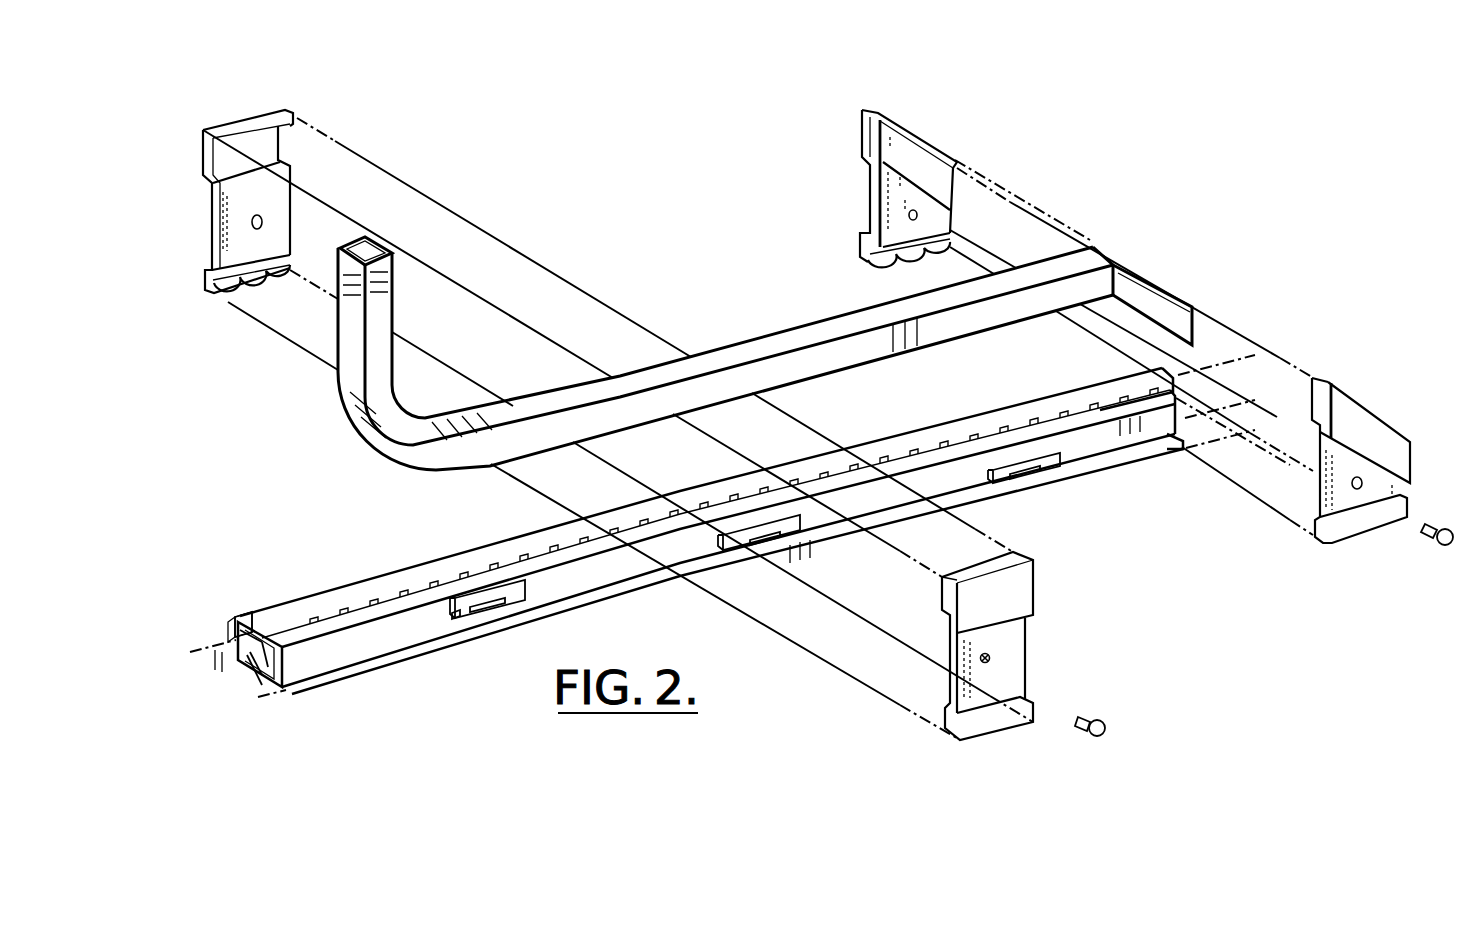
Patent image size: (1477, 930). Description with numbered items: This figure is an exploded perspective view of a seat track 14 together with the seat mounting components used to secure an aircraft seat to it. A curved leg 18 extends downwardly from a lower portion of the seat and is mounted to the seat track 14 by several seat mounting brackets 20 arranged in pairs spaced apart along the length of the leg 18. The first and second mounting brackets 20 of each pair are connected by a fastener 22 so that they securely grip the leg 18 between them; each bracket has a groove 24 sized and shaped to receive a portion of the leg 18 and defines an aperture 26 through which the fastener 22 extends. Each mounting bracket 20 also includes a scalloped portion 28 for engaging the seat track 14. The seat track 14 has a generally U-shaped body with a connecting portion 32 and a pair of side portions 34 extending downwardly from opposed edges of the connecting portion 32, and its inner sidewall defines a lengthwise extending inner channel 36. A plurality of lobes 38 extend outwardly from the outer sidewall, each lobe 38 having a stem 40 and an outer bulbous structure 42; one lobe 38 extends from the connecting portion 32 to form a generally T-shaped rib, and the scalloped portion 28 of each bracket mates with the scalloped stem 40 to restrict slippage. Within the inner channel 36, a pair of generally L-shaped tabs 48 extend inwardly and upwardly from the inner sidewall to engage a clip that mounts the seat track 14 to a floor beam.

The seat track 14 is at (372, 637).
The curved leg 18 is at (747, 353).
The seat mounting bracket 20 is at (283, 192).
The fastener 22 is at (1447, 529).
The groove 24 is at (212, 174).
The aperture 26 is at (253, 223).
The scalloped portion 28 is at (218, 293).
The connecting portion 32 is at (268, 667).
The side portions 34 is at (240, 630).
The inner channel 36 is at (263, 675).
The lobe 38 is at (1140, 385).
The stem 40 is at (240, 620).
The outer bulbous structure 42 is at (313, 600).
The L-shaped tabs 48 is at (247, 655).